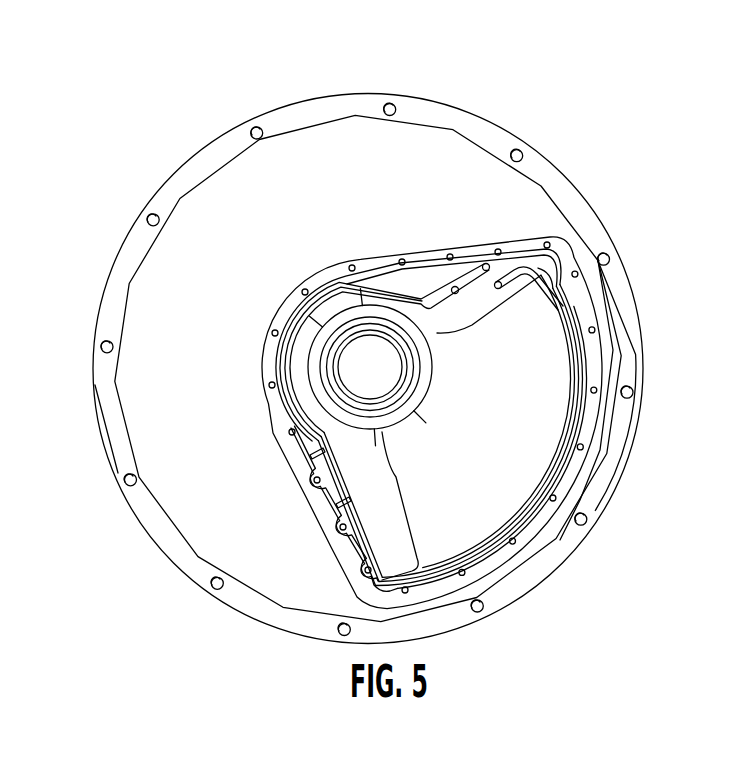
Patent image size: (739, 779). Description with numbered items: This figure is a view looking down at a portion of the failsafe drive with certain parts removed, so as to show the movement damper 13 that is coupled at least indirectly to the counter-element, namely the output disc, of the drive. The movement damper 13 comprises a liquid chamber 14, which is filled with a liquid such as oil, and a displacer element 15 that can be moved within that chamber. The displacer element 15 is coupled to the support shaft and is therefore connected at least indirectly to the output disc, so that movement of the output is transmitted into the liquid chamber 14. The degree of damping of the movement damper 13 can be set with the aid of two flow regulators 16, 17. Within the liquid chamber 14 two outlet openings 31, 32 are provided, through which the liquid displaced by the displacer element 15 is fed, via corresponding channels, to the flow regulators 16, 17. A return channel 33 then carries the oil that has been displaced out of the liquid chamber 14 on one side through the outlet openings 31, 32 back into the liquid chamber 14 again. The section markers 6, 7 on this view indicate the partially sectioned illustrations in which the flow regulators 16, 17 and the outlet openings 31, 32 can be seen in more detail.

The movement damper 13 is at (82, 265).
The liquid chamber 14 is at (545, 432).
The displacer element 15 is at (408, 556).
The flow regulator 16 is at (506, 263).
The flow regulator 17 is at (467, 280).
The outlet opening 31 is at (575, 395).
The outlet opening 32 is at (500, 319).
The return channel 33 is at (407, 293).
The section line 6- 6 is at (564, 339).
The section line 7- 7 is at (513, 343).